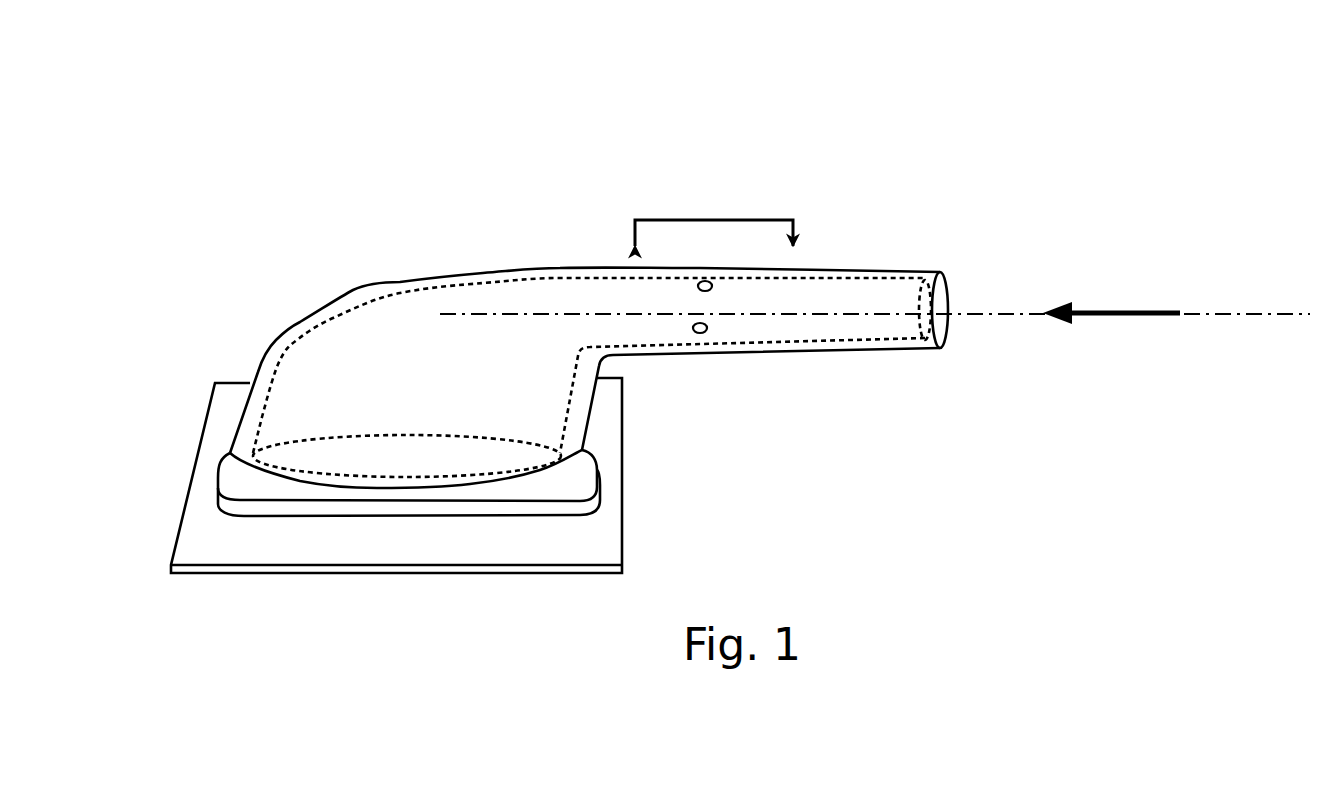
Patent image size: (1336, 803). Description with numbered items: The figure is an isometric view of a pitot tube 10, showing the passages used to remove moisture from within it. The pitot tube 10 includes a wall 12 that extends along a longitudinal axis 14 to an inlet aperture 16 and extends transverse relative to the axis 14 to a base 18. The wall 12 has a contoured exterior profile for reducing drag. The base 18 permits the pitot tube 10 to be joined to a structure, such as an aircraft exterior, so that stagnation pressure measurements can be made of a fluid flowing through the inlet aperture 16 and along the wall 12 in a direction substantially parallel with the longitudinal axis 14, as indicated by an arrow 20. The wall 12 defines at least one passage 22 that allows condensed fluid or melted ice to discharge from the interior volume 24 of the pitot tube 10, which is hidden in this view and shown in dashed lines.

The pitot tube 10 is at (1040, 100).
The wall 12 is at (462, 228).
The longitudinal axis 14 is at (1253, 313).
The inlet aperture 16 is at (975, 278).
The base 18 is at (622, 462).
The arrow 20 is at (1117, 311).
The passage 22 is at (712, 290).
The interior volume 24 is at (357, 315).